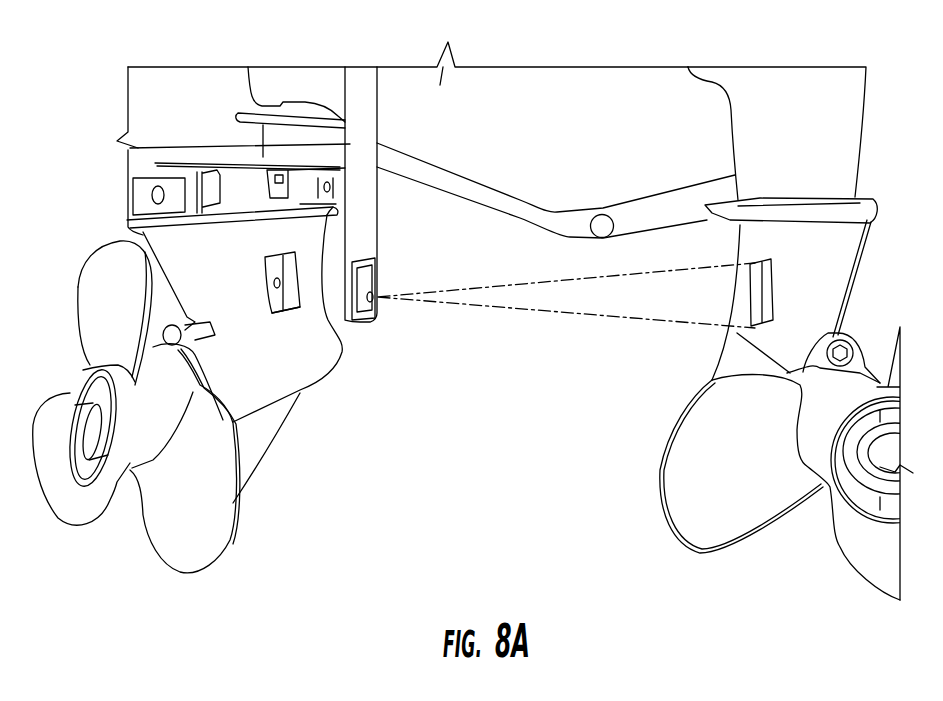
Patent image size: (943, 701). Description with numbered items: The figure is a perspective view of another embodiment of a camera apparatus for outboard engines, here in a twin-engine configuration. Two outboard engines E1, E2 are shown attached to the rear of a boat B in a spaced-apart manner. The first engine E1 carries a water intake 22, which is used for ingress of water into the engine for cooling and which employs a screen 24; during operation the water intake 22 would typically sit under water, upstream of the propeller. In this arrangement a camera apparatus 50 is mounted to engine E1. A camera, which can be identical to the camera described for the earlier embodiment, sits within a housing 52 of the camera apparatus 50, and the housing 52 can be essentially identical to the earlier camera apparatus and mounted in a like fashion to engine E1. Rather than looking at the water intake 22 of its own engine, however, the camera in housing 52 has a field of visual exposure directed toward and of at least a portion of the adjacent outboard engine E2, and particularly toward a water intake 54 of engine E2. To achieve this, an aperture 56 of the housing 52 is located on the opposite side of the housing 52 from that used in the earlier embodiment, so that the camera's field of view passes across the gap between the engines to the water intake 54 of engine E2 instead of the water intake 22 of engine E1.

The boat B is at (517, 103).
The engine E1 is at (152, 100).
The engine E2 is at (769, 97).
The water intake 22 is at (309, 304).
The screen 24 is at (296, 308).
The camera apparatus 50 is at (404, 218).
The housing 52 is at (363, 100).
The water intake 54 is at (780, 288).
The aperture 56 is at (368, 310).